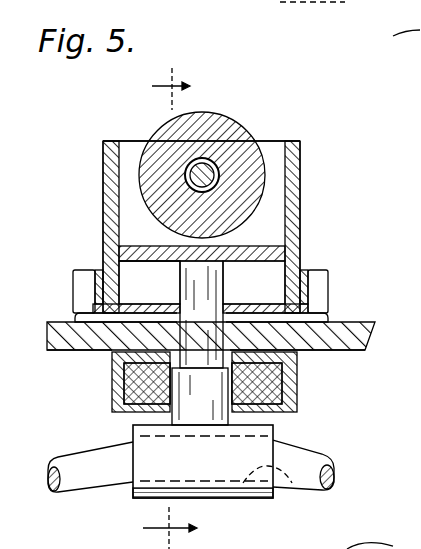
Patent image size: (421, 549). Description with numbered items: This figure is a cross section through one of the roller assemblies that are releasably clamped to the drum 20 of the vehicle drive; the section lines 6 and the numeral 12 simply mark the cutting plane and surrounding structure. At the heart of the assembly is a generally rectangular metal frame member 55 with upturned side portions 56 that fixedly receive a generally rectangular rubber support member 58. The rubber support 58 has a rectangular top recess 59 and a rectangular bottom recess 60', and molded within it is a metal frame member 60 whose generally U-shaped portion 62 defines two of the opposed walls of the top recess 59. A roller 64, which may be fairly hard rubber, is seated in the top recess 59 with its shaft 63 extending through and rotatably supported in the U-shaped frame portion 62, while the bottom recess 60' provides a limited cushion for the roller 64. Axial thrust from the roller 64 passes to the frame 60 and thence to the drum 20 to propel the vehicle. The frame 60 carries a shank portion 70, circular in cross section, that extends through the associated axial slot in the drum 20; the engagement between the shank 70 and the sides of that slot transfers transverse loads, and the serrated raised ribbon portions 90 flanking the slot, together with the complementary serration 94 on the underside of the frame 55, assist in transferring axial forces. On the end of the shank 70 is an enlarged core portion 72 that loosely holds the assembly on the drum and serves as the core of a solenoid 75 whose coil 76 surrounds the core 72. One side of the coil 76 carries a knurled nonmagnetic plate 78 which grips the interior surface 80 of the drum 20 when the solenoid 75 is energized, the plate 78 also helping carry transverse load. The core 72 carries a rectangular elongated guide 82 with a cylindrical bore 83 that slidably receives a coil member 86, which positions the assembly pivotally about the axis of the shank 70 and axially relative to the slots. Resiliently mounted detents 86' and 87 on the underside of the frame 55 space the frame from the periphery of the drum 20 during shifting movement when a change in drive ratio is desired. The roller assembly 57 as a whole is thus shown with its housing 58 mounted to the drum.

The section line 6- 6 is at (184, 308).
The frame 12 is at (391, 42).
The drum 20 is at (376, 316).
The metal frame member 55 is at (149, 284).
The upturned side portions 56 is at (95, 272).
The roller assembly 57 is at (322, 188).
The rubber support member 58 is at (300, 184).
The top recess 59 is at (275, 146).
The metal frame member 60 is at (202, 237).
The bottom recess 60' is at (120, 241).
The U-shaped portion 62 is at (120, 156).
The shaft 63 is at (217, 160).
The roller 64 is at (152, 143).
The shank portion 70 is at (218, 282).
The core portion 72 is at (200, 396).
The solenoid 75 is at (98, 393).
The coil 76 is at (297, 400).
The knurled nonmagnetic plate 78 is at (308, 352).
The interior surface 80 is at (87, 352).
The guide 82 is at (145, 494).
The cylindrical bore 83 is at (293, 490).
The coil member 86 is at (90, 485).
The detent 86' is at (99, 296).
The detent 87 is at (330, 318).
The serrated raised ribbon portions 90 is at (201, 314).
The left serration 94 is at (302, 272).